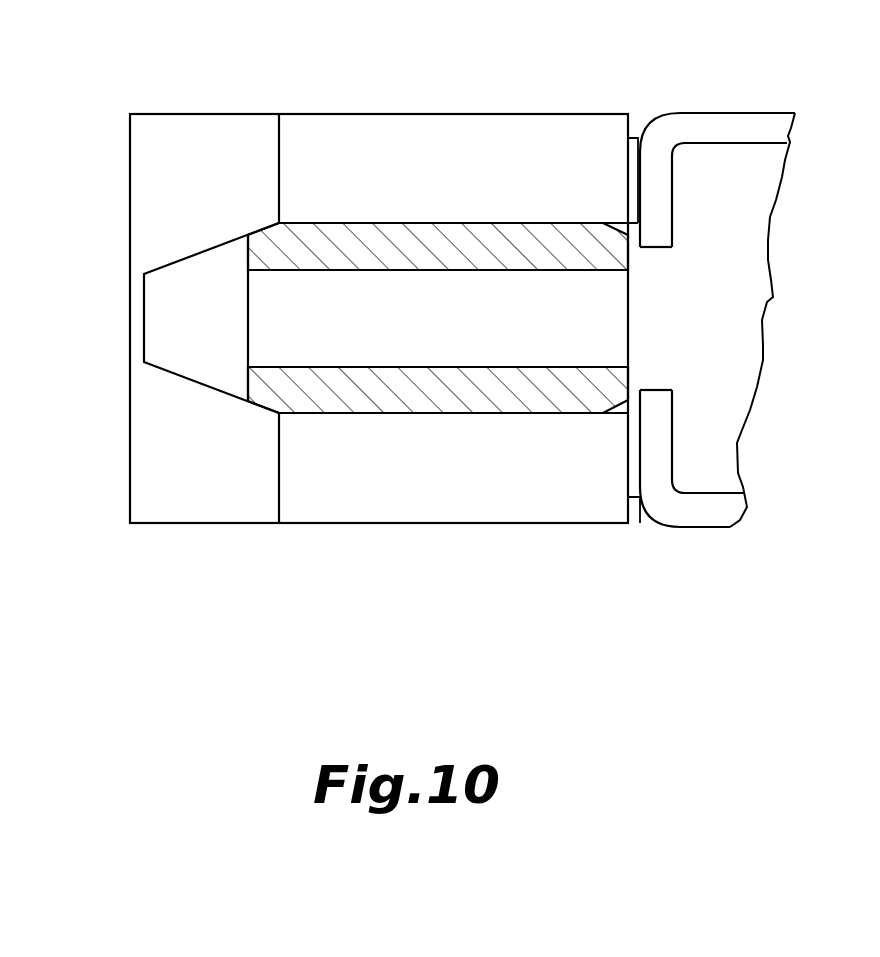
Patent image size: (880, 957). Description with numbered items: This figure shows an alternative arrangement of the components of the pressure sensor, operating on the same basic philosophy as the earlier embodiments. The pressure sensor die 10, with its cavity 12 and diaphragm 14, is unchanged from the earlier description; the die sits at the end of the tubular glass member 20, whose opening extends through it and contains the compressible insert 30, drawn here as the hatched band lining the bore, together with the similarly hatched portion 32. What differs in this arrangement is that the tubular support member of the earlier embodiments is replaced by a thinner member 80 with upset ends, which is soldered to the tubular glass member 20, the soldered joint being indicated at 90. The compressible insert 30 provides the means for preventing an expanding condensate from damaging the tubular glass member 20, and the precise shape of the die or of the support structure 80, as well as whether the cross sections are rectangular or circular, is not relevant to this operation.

The pressure sensor die 10 is at (172, 127).
The cavity 12 is at (158, 292).
The diaphragm 14 is at (138, 345).
The tubular glass member 20 is at (320, 512).
The compressible insert 30 is at (495, 405).
The upper sleeve 32 is at (373, 291).
The alternative structure 80 is at (697, 123).
The solder 90 is at (636, 130).